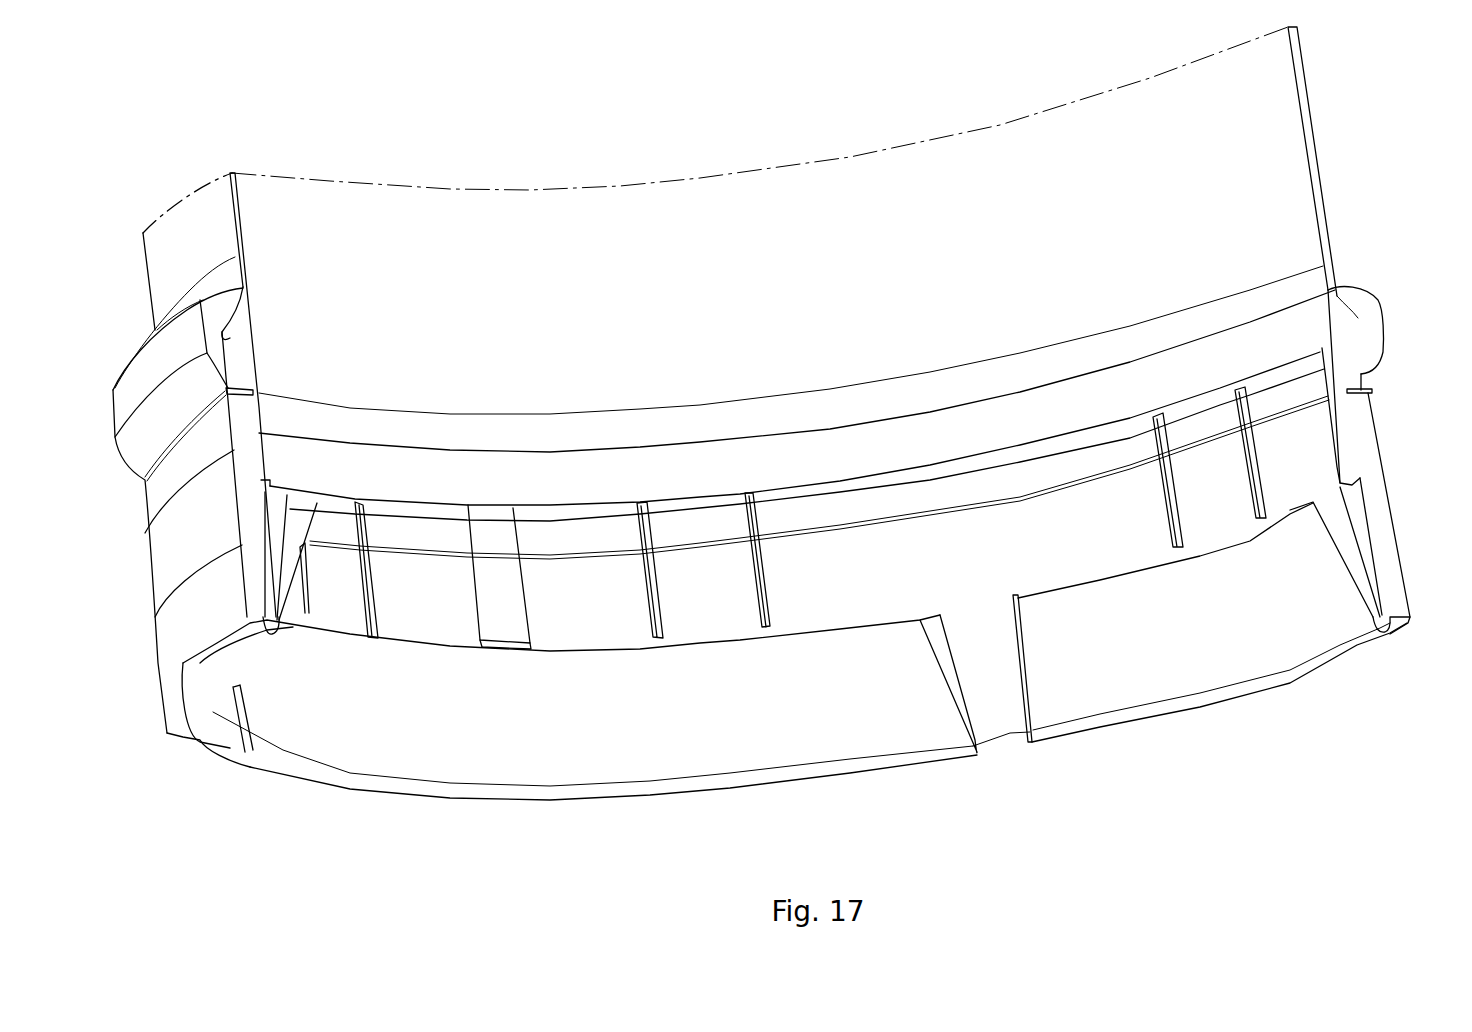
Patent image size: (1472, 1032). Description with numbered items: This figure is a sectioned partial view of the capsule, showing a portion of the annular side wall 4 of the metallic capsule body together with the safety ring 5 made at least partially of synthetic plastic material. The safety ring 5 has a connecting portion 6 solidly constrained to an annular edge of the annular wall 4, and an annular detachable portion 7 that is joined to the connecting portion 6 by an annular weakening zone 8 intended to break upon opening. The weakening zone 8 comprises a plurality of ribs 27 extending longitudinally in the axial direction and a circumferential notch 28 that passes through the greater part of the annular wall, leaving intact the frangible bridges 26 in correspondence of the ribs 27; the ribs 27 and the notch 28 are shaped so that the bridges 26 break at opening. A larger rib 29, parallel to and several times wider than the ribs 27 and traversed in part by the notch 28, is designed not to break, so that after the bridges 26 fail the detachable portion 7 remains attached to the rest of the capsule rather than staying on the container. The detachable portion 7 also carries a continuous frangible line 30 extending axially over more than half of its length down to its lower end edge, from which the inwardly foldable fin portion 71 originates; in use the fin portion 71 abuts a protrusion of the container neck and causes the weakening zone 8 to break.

The annular side wall 4 is at (187, 210).
The safety ring 5 is at (147, 370).
The connecting portion 6 is at (1367, 310).
The annular detachable portion 7 is at (158, 500).
The annular weakening zone 8 is at (947, 513).
The frangible bridges 26 is at (1252, 432).
The ribs 27 is at (1185, 505).
The circumferential notch 28 is at (1361, 372).
The rib 29 is at (513, 594).
The frangible line 30 is at (1005, 735).
The fin portion 71 is at (355, 750).